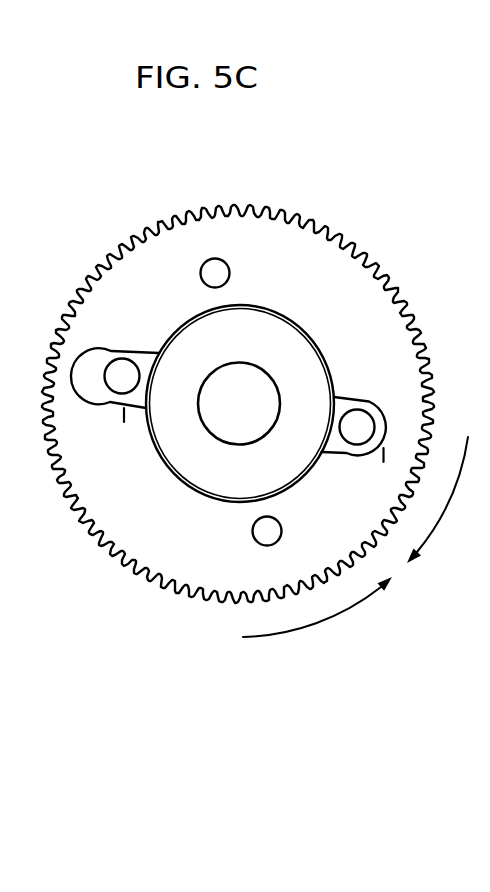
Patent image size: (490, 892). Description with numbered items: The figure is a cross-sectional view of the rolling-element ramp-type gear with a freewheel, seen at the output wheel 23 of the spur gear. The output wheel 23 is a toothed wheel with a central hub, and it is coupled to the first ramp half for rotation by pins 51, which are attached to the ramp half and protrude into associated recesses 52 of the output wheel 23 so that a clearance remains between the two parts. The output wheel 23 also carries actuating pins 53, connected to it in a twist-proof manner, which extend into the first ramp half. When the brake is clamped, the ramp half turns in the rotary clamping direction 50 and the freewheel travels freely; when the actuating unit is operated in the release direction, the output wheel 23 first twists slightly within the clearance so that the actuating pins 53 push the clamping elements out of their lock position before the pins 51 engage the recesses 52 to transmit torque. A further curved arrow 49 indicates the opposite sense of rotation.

The output wheel 23 is at (155, 543).
The first rotation direction arrow 49 is at (453, 500).
The rotary clamping direction 50 is at (332, 616).
The pins 51 is at (117, 375).
The recesses 52 is at (123, 412).
The actuating pins 53 is at (213, 272).